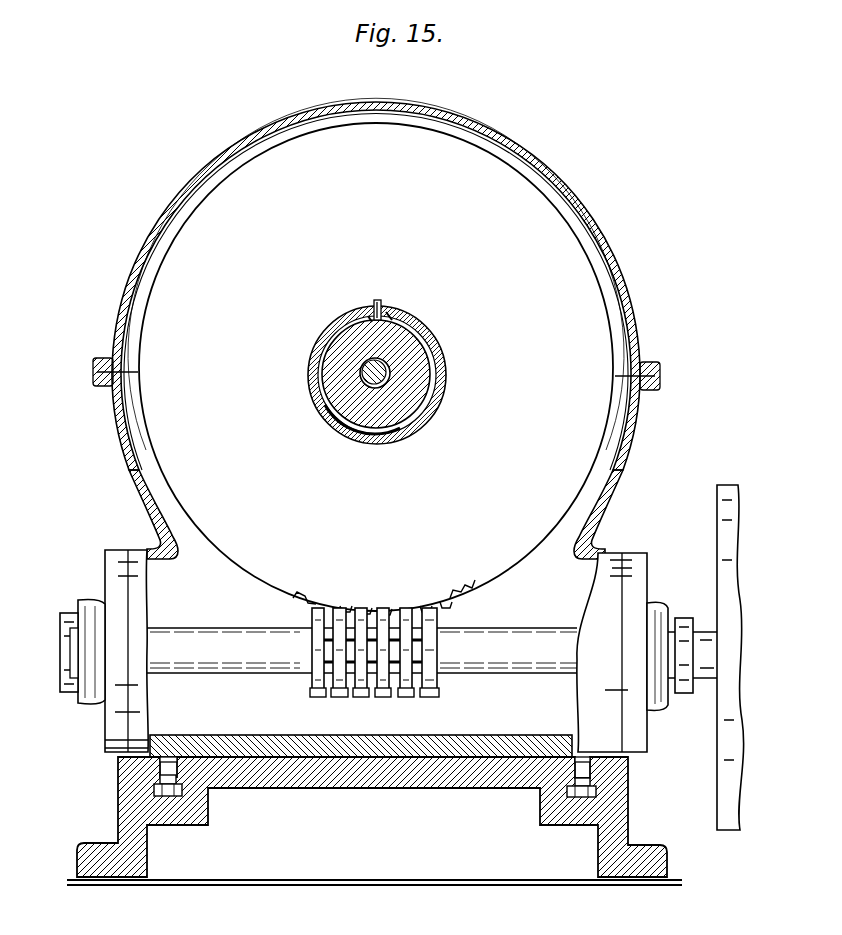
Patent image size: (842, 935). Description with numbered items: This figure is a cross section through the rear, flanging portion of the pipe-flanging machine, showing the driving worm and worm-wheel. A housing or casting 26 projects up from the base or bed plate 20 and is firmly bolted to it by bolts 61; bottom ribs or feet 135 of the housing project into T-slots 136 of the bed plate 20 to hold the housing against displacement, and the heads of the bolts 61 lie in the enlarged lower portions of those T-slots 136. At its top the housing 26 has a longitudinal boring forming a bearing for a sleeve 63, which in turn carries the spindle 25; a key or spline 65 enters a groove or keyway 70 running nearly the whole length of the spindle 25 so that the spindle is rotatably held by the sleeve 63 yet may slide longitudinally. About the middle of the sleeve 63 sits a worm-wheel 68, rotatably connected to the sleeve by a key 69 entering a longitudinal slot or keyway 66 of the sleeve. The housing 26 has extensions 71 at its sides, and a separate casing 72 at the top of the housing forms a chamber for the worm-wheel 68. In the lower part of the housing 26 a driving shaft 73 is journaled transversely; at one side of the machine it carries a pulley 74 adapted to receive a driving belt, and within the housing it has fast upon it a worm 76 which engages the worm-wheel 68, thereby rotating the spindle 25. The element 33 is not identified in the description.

The bed 20 is at (118, 800).
The spindle 25 is at (325, 342).
The housing 26 is at (366, 622).
The shaft 33 is at (395, 365).
The bolts 61 is at (160, 781).
The sleeve 63 is at (345, 428).
The spline 65 is at (390, 306).
The keyway of the sleeve 66 is at (360, 318).
The worm-wheel 68 is at (376, 369).
The key 69 is at (377, 300).
The keyway of the spindle 70 is at (405, 318).
The extensions 71 is at (133, 426).
The casing 72 is at (213, 162).
The driving shaft 73 is at (257, 676).
The pulley 74 is at (720, 735).
The worm 76 is at (360, 697).
The feet 135 is at (160, 761).
The T-slots 136 is at (172, 797).